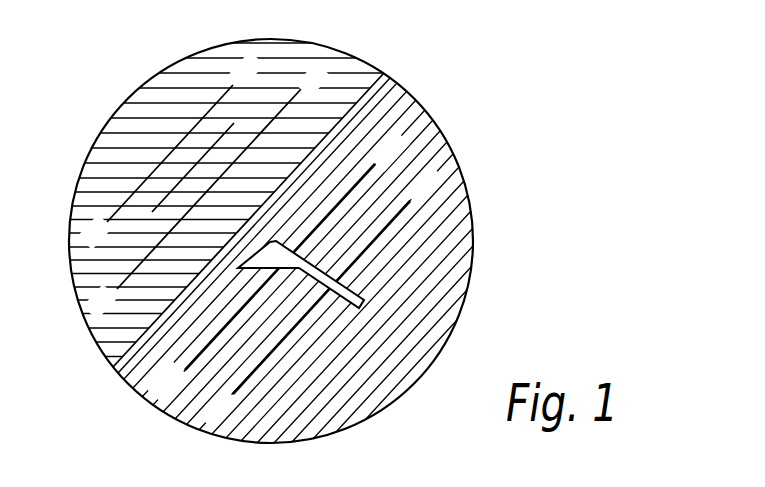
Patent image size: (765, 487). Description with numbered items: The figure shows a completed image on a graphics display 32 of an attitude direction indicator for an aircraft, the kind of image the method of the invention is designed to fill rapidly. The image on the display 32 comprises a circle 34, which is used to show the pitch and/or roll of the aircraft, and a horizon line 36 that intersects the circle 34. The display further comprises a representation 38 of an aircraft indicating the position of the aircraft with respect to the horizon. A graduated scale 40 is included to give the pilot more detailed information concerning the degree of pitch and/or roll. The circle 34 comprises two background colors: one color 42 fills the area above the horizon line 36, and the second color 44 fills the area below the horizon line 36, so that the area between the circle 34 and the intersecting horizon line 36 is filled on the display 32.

The graphics display 32 is at (334, 240).
The circle 34 is at (465, 303).
The horizon line 36 is at (378, 76).
The representation of an aircraft 38 is at (120, 375).
The graduated scale 40 is at (390, 173).
The first background color 42 is at (192, 67).
The second background color 44 is at (333, 433).